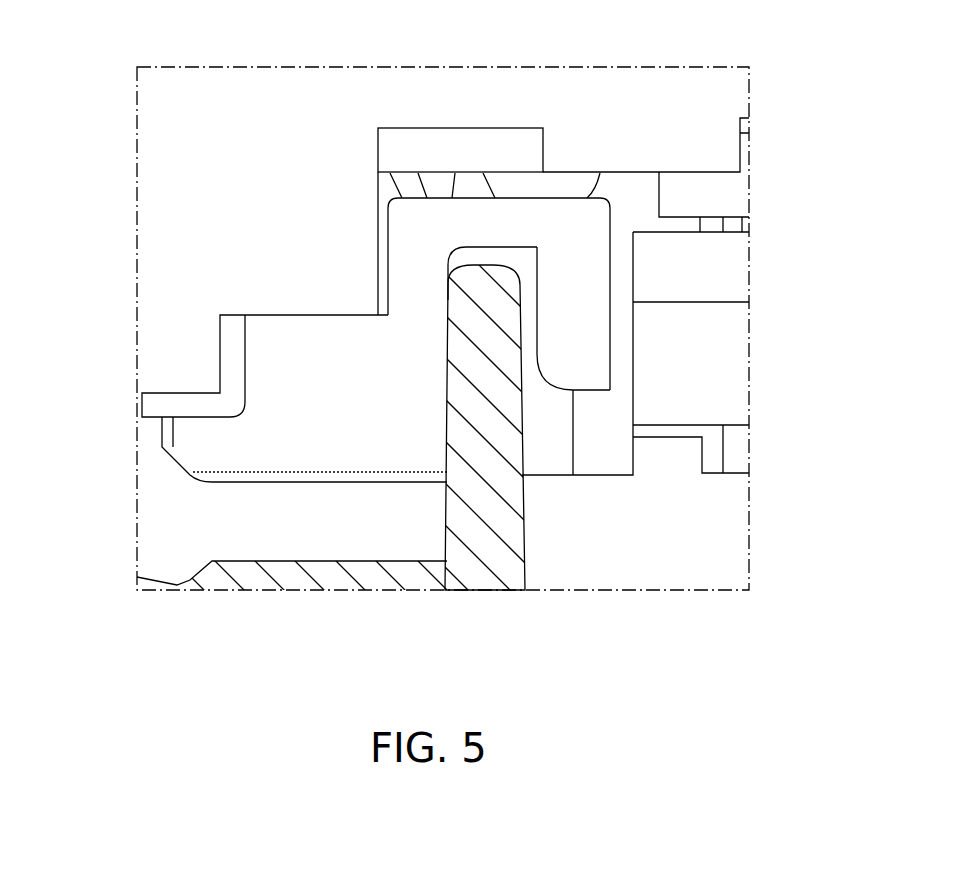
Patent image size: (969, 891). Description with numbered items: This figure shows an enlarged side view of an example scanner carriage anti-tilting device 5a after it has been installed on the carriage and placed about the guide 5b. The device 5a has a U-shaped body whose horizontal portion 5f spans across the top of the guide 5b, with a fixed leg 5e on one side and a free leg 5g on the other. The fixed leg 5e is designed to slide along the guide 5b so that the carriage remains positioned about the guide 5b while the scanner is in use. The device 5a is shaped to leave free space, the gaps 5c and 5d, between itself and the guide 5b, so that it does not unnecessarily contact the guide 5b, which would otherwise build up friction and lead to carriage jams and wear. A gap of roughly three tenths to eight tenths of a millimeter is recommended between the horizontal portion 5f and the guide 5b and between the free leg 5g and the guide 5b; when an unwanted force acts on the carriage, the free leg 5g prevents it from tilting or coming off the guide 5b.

The anti-tilting device 5a is at (160, 513).
The guide 5b is at (488, 422).
The gap 5c is at (498, 263).
The gap 5d is at (522, 285).
The fixed leg 5e is at (442, 245).
The horizontal portion 5f is at (477, 217).
The free leg 5g is at (567, 340).